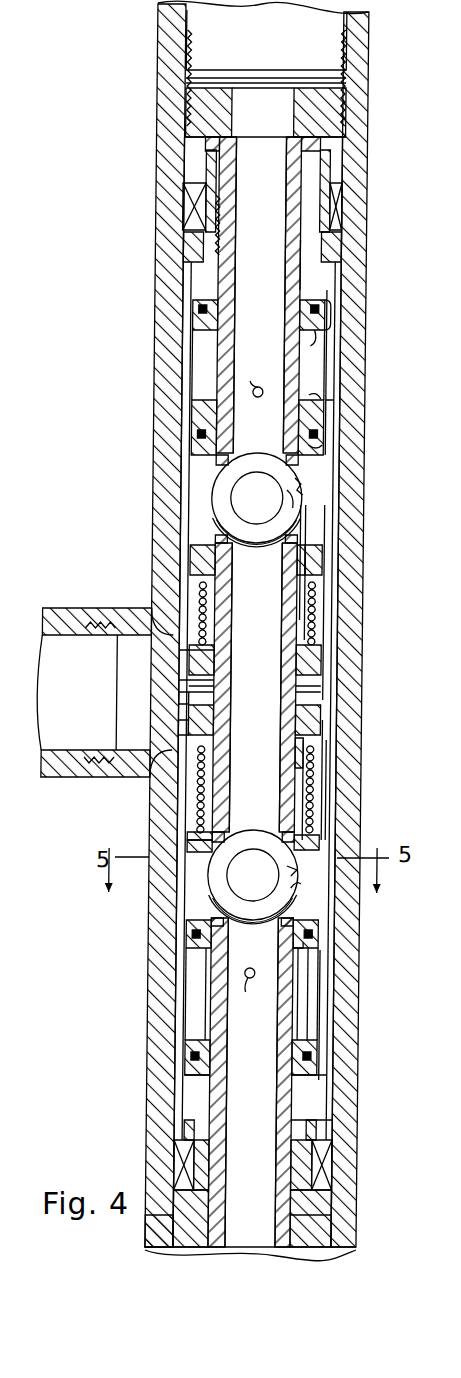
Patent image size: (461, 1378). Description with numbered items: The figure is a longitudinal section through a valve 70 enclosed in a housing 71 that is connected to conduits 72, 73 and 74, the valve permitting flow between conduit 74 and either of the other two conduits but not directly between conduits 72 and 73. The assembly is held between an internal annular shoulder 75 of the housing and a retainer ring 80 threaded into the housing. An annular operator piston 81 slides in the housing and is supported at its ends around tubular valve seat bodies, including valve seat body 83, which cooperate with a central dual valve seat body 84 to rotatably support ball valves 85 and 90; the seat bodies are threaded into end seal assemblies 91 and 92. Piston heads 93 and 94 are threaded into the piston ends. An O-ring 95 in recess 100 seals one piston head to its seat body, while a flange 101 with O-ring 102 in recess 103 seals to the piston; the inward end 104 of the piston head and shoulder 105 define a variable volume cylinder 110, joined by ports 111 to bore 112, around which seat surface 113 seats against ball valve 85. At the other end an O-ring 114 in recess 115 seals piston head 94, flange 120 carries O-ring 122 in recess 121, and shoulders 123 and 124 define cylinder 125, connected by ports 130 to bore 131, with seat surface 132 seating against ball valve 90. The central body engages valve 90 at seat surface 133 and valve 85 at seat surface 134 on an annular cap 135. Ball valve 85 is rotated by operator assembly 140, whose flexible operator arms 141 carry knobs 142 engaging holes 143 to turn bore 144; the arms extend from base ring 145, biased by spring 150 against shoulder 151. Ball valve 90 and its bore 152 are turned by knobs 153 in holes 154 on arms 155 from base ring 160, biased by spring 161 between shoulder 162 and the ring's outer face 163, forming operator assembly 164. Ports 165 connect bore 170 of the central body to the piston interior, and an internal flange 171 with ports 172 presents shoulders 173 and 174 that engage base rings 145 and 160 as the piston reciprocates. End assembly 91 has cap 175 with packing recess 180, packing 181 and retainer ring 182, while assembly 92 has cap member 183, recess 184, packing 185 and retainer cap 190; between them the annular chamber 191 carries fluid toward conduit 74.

The valve 70 is at (156, 1040).
The housing 71 is at (170, 928).
The conduit 72 is at (352, 1222).
The conduit 73 is at (352, 18).
The conduit 74 is at (88, 618).
The internal annular shoulder 75 is at (330, 1222).
The internal annular retainer ring 80 is at (348, 82).
The operator piston 81 is at (322, 795).
The valve seat body 83 is at (304, 282).
The central dual valve seat body 84 is at (222, 722).
The ball valve 85 is at (302, 902).
The ball valve 90 is at (308, 480).
The end seal assembly 91 is at (332, 1120).
The end seal assembly 92 is at (340, 158).
The annular piston head 93 is at (332, 1078).
The annular piston head 94 is at (334, 292).
The O-ring 95 is at (212, 1054).
The internal annular recess 100 is at (288, 1068).
The external annular flange 101 is at (326, 972).
The O-ring 102 is at (212, 934).
The external annular recess 103 is at (305, 946).
The inward end of piston head 104 is at (326, 1046).
The outer shoulder 105 is at (198, 970).
The annular variable volume cylinder 110 is at (312, 1000).
The ports 111 is at (241, 991).
The bore 112 is at (242, 1105).
The annular valve seat surface 113 is at (226, 902).
The O-ring 114 is at (224, 308).
The internal annular recess 115 is at (303, 318).
The external annular flange 120 is at (322, 420).
The external annular recess 121 is at (222, 432).
The O-ring 122 is at (322, 446).
The shoulder 123 is at (320, 345).
The shoulder 124 is at (322, 400).
The variable volume annular cylinder 125 is at (210, 398).
The ports 130 is at (258, 379).
The bore 131 is at (288, 266).
The annular valve seat surface 132 is at (225, 470).
The annular seat surface 133 is at (228, 520).
The annular seat surface 134 is at (214, 846).
The annular cap 135 is at (212, 832).
The operator assembly 140 is at (322, 752).
The operator arms 141 is at (308, 862).
The operator knob 142 is at (308, 884).
The holes 143 is at (262, 852).
The bore 144 is at (262, 872).
The base ring 145 is at (325, 740).
The spring 150 is at (336, 770).
The shoulder 151 is at (320, 820).
The bore 152 is at (252, 506).
The operator knobs 153 is at (302, 500).
The operator holes 154 is at (308, 522).
The operator arms 155 is at (320, 556).
The base ring 160 is at (340, 636).
The spring 161 is at (214, 622).
The external annular shoulder 162 is at (214, 588).
The outer face of base ring 163 is at (222, 655).
The operator assembly 164 is at (322, 584).
The ports 165 is at (222, 688).
The bore 170 is at (288, 772).
The internal annular flange 171 is at (200, 680).
The ports 172 is at (196, 700).
The internal annular shoulder 173 is at (196, 728).
The internal annular shoulder 174 is at (200, 652).
The annular cap 175 is at (330, 1140).
The external packing recess 180 is at (208, 1148).
The packing 181 is at (196, 1165).
The threaded retainer ring 182 is at (334, 1180).
The annular cap member 183 is at (192, 262).
The external packing recess 184 is at (345, 222).
The packing 185 is at (184, 205).
The threaded retainer cap 190 is at (200, 158).
The annular chamber 191 is at (190, 275).